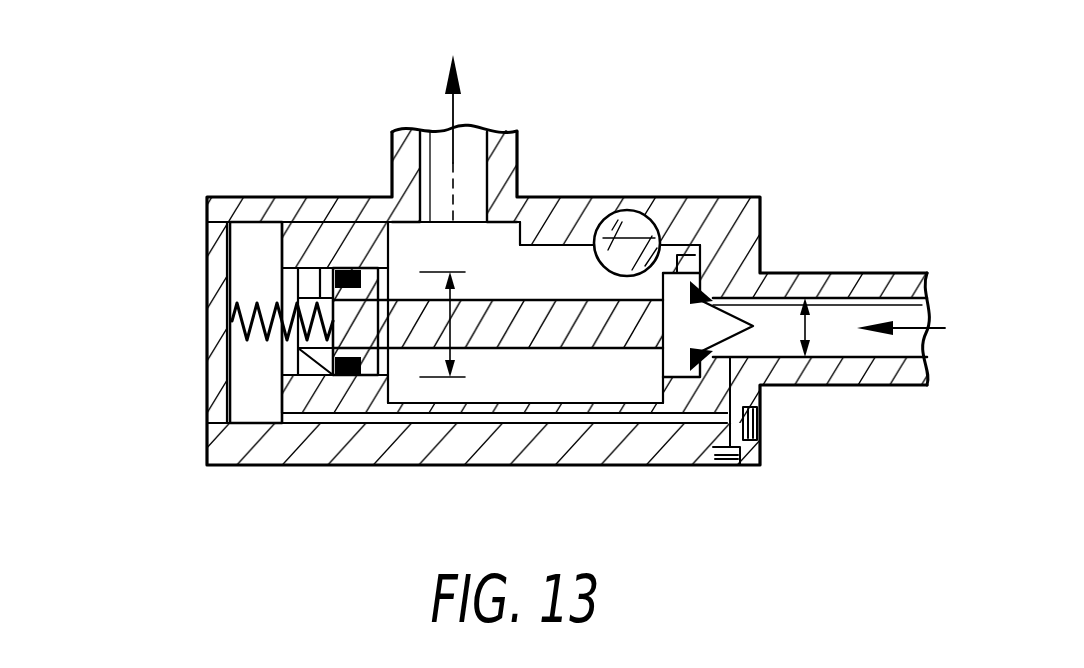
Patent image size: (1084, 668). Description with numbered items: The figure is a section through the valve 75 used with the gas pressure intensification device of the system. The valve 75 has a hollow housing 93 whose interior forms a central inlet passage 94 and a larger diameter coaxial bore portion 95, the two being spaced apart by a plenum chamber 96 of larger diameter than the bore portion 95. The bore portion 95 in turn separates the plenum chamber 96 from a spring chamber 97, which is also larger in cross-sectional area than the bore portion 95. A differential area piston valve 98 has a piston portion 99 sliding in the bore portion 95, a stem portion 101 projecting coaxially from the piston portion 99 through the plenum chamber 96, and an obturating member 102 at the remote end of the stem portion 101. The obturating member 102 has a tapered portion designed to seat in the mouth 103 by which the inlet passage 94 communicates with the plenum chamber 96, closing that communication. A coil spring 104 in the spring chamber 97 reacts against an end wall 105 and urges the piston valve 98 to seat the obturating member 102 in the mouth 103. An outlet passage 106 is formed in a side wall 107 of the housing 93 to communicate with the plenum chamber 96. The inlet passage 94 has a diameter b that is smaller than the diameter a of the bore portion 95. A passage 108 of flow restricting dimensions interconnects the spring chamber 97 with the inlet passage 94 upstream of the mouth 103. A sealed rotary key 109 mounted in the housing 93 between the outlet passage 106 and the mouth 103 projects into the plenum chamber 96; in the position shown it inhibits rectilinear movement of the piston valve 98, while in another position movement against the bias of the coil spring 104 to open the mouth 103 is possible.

The valve 75 is at (185, 188).
The hollow housing 93 is at (265, 467).
The central inlet passage 94 is at (843, 317).
The larger diameter coaxial bore portion 95 is at (357, 378).
The plenum chamber 96 is at (543, 263).
The spring chamber 97 is at (257, 243).
The differential area piston valve 98 is at (553, 345).
The piston portion 99 is at (313, 283).
The stem portion 101 is at (618, 325).
The obturating member 102 is at (672, 360).
The mouth 103 is at (708, 292).
The coil spring 104 is at (280, 338).
The end wall 105 is at (220, 303).
The outlet passage 106 is at (478, 146).
The side wall 107 is at (597, 212).
The passage of flow restricting dimensions 108 is at (443, 412).
The sealed rotary key 109 is at (703, 247).
The diameter of the larger diameter bore portion a is at (452, 322).
The diameter of the inlet passage b is at (808, 328).